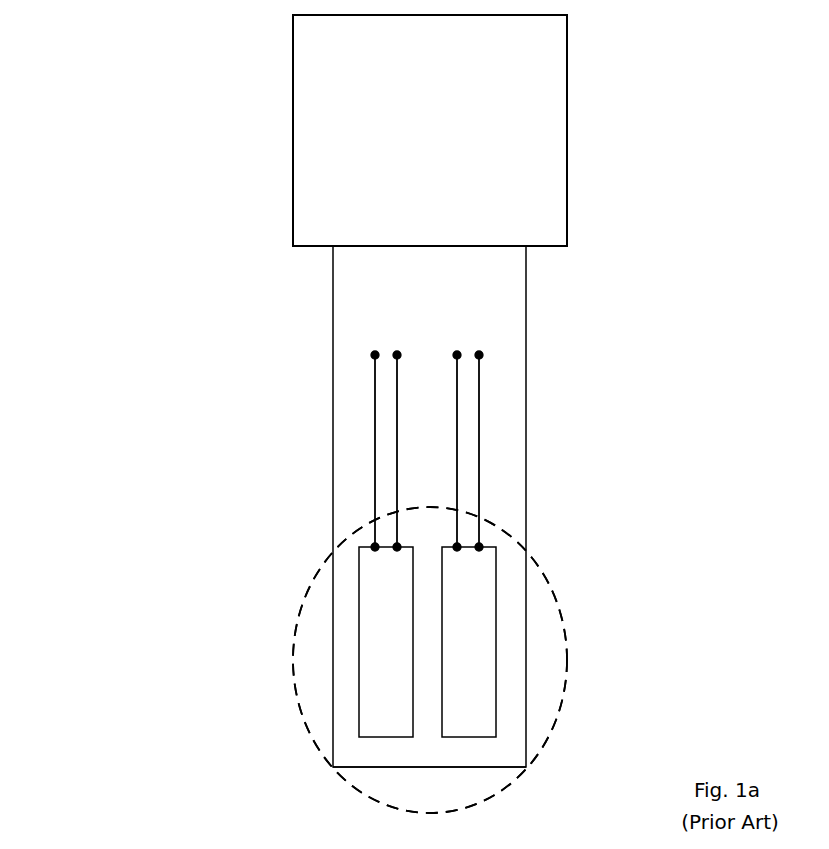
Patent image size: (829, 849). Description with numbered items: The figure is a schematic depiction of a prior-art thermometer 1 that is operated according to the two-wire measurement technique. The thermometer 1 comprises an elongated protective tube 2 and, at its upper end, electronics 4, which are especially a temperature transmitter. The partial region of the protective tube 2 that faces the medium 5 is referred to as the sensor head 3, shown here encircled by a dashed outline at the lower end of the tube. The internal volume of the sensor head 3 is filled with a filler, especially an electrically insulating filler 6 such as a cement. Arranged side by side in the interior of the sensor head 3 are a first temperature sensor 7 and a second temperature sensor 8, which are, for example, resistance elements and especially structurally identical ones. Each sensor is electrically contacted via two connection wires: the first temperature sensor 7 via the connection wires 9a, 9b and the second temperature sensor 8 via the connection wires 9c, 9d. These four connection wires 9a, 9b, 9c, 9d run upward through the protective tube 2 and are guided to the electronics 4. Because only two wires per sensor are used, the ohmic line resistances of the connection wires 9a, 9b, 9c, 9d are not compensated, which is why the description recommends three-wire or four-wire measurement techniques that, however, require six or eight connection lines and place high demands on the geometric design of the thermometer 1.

The thermometer 1 is at (47, 72).
The protective tube 2 is at (333, 462).
The sensor head 3 is at (287, 672).
The electronics 4 is at (430, 130).
The medium 5 is at (470, 660).
The electrically insulating filler 6 is at (510, 752).
The first temperature sensor 7 is at (386, 642).
The second temperature sensor 8 is at (469, 642).
The connection wire 9a is at (369, 438).
The connection wire 9b is at (404, 438).
The connection wire 9c is at (449, 438).
The connection wire 9d is at (485, 438).